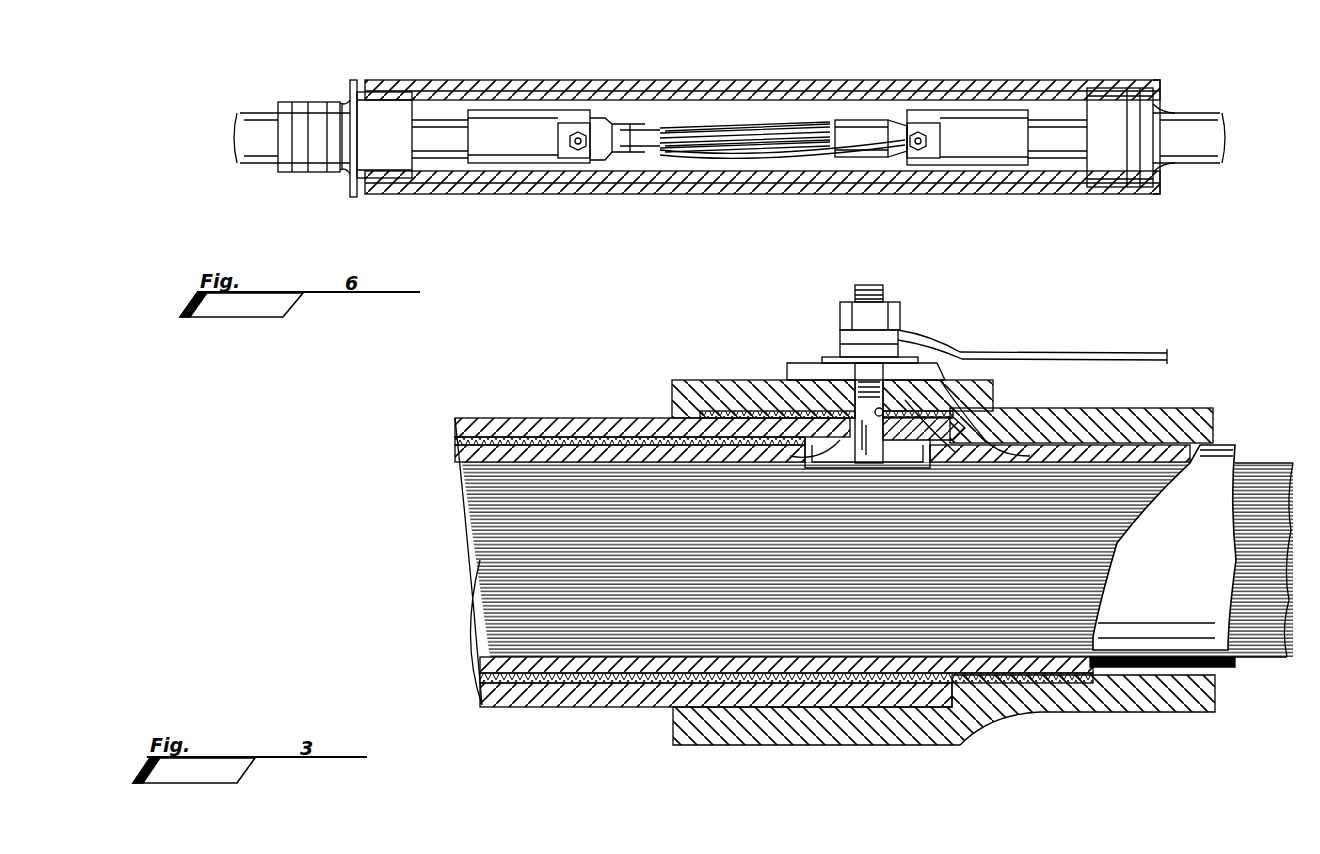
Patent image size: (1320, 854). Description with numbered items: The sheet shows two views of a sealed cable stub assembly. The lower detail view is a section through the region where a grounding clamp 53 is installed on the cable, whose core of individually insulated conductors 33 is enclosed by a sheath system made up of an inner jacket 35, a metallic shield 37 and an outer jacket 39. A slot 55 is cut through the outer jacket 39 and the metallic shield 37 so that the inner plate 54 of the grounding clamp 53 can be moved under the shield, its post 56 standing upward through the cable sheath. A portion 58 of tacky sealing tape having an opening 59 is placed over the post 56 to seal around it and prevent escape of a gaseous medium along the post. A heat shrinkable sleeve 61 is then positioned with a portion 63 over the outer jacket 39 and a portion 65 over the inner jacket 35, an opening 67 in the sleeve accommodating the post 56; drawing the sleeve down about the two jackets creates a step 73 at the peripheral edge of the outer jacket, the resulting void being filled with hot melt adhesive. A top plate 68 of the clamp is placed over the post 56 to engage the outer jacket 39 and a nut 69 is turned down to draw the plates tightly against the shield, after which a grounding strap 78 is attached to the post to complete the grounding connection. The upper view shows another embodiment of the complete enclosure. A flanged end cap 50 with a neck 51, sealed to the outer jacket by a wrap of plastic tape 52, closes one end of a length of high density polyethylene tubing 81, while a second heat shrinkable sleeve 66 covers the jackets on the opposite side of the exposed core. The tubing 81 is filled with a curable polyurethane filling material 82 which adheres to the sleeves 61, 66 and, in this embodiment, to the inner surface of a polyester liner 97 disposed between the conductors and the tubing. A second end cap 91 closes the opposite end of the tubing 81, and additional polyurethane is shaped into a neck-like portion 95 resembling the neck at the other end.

In FIG. 3, the individually insulated conductors 33 is at (1270, 465).
In FIG. 3, the inner jacket 35 is at (1140, 455).
In FIG. 3, the metallic shield 37 is at (636, 440).
In FIG. 3, the outer jacket 39 is at (575, 418).
In FIG. 6, the flanged end cap 50 is at (392, 100).
In FIG. 6, the neck 51 is at (350, 95).
In FIG. 6, the plastic tape 52 is at (308, 102).
In FIG. 6, the grounding clamp 53 is at (585, 132).
In FIG. 3, the grounding clamp 53 is at (770, 362).
In FIG. 3, the inner plate 54 is at (955, 445).
In FIG. 3, the slot 55 is at (860, 398).
In FIG. 3, the post 56 is at (885, 290).
In FIG. 3, the sealing tape portion 58 is at (745, 412).
In FIG. 3, the opening 59 is at (884, 410).
In FIG. 6, the heat shrinkable sleeve 61 is at (535, 112).
In FIG. 3, the heat shrinkable sleeve 61 is at (1130, 410).
In FIG. 3, the portion of the sleeve 63 is at (680, 380).
In FIG. 3, the portion of the sleeve 65 is at (1185, 412).
In FIG. 6, the heat shrinkable sleeve 66 is at (995, 112).
In FIG. 3, the opening 67 is at (848, 364).
In FIG. 6, the top plate 68 is at (570, 160).
In FIG. 3, the top plate 68 is at (855, 363).
In FIG. 3, the nut 69 is at (895, 347).
In FIG. 3, the step 73 is at (985, 438).
In FIG. 6, the grounding strap 78 is at (870, 122).
In FIG. 3, the grounding strap 78 is at (1085, 352).
In FIG. 6, the tubing 81 is at (460, 85).
In FIG. 6, the filling material 82 is at (748, 188).
In FIG. 6, the second end cap 91 is at (1115, 95).
In FIG. 6, the neck-like portion 95 is at (1170, 108).
In FIG. 6, the liner 97 is at (940, 100).